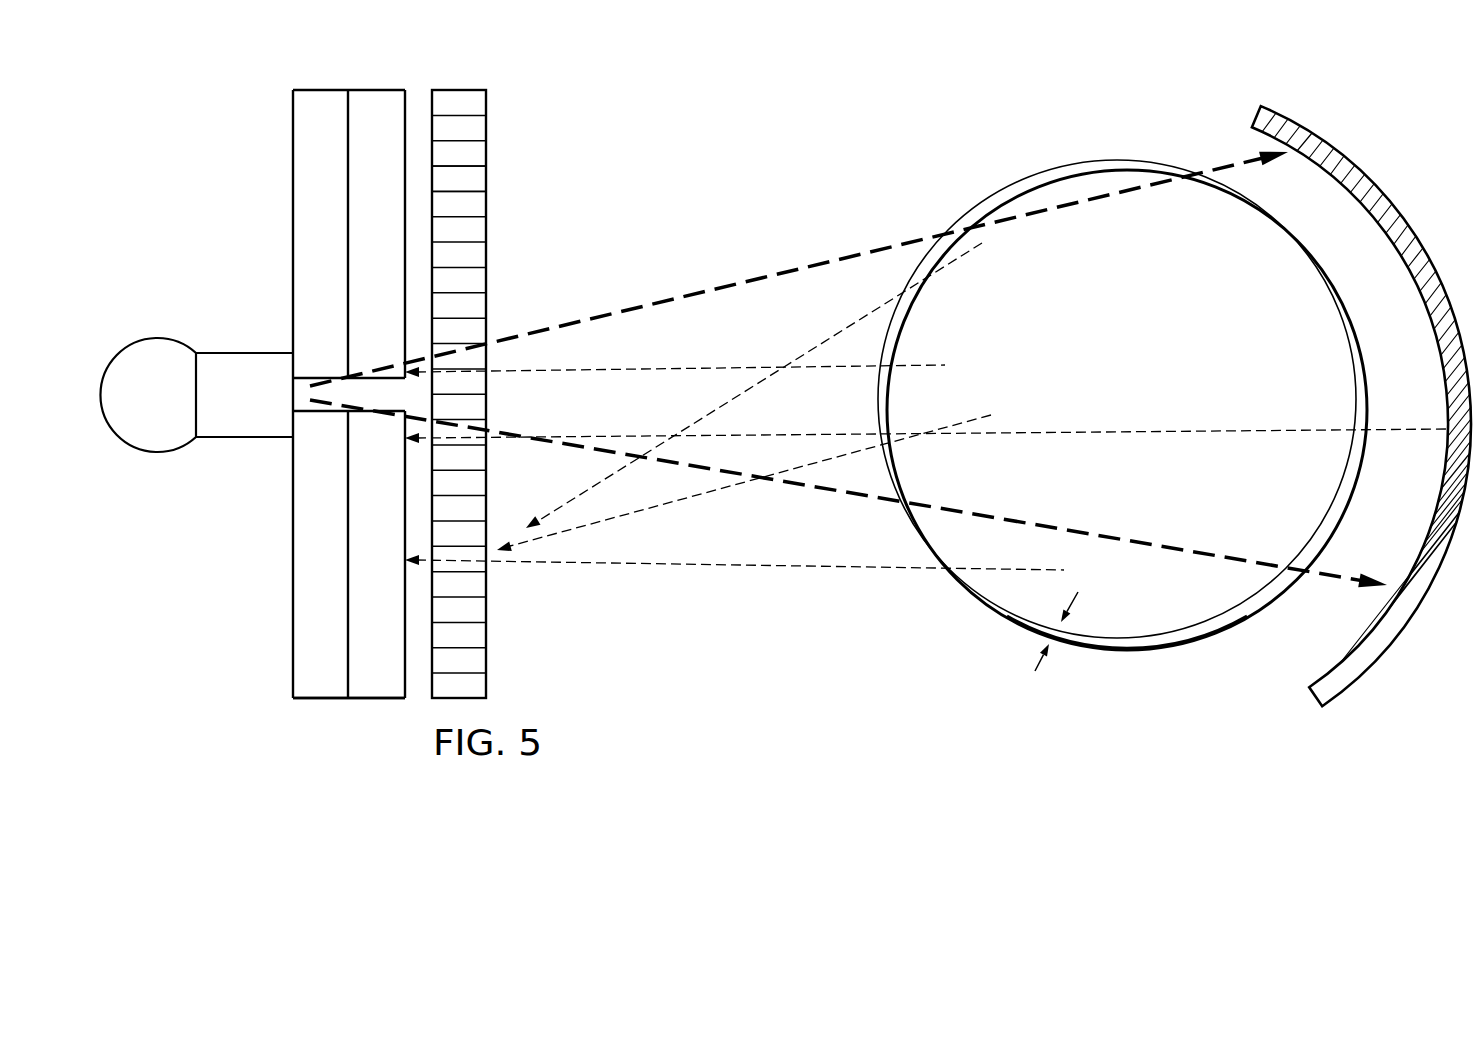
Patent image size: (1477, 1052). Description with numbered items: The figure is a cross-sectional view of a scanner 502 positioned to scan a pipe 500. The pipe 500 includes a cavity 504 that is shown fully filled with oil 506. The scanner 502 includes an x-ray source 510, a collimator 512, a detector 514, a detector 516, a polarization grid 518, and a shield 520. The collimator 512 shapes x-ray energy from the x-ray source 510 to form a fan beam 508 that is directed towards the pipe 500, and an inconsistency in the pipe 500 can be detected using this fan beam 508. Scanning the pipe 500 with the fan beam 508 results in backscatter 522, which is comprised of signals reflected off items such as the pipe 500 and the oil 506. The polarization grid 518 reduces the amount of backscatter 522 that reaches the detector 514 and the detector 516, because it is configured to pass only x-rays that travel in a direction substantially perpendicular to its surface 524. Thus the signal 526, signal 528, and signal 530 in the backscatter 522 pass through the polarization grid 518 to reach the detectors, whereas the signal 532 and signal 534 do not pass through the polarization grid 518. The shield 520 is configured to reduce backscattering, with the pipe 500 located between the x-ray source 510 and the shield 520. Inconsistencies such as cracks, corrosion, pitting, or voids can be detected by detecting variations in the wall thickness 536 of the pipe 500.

The pipe 500 is at (1140, 160).
The scanner 502 is at (216, 130).
The cavity 504 is at (1068, 187).
The oil 506 is at (1173, 647).
The fan beam 508 is at (808, 265).
The x-ray source 510 is at (157, 335).
The collimator 512 is at (320, 87).
The detector 514 is at (377, 87).
The detector 516 is at (376, 690).
The polarization grid 518 is at (458, 87).
The shield 520 is at (1350, 173).
The backscatter 522 is at (925, 732).
The surface 524 is at (478, 177).
The signal 526 is at (732, 366).
The signal 528 is at (625, 436).
The signal 530 is at (776, 571).
The signal 532 is at (837, 335).
The signal 534 is at (695, 496).
The wall thickness 536 is at (1042, 669).